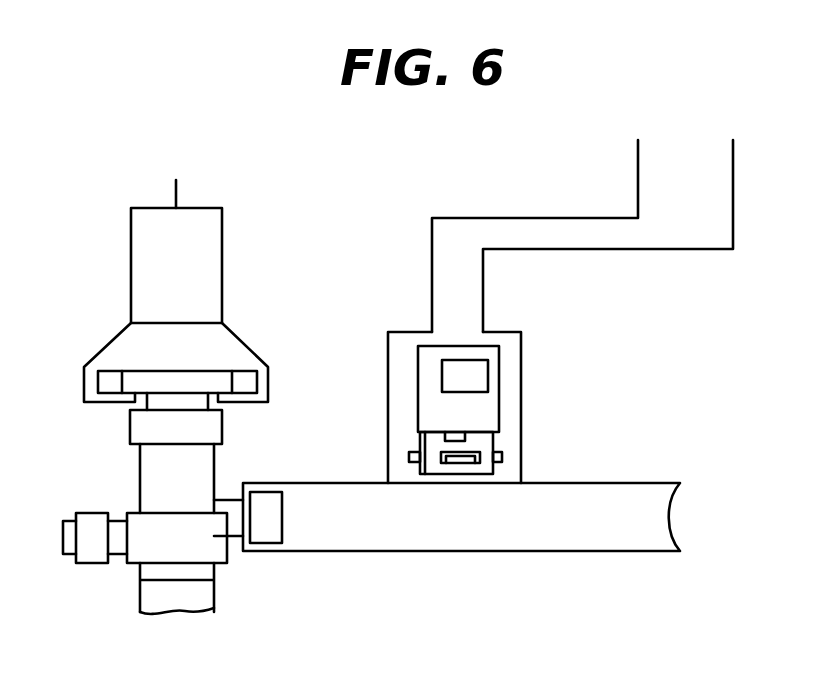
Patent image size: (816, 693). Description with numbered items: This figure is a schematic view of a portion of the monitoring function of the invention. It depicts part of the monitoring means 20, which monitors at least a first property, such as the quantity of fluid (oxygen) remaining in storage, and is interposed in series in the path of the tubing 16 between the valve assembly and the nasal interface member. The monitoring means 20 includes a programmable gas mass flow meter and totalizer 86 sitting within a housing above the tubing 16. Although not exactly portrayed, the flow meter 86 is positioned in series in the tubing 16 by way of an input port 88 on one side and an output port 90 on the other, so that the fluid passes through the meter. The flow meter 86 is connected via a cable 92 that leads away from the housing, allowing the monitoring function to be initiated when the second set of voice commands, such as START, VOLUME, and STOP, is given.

The tubing 16 is at (611, 532).
The monitoring means 20 is at (527, 423).
The programmable gas mass flow meter and totalizer 86 is at (499, 386).
The input port 88 is at (407, 457).
The output port 90 is at (500, 463).
The cable 92 is at (432, 259).